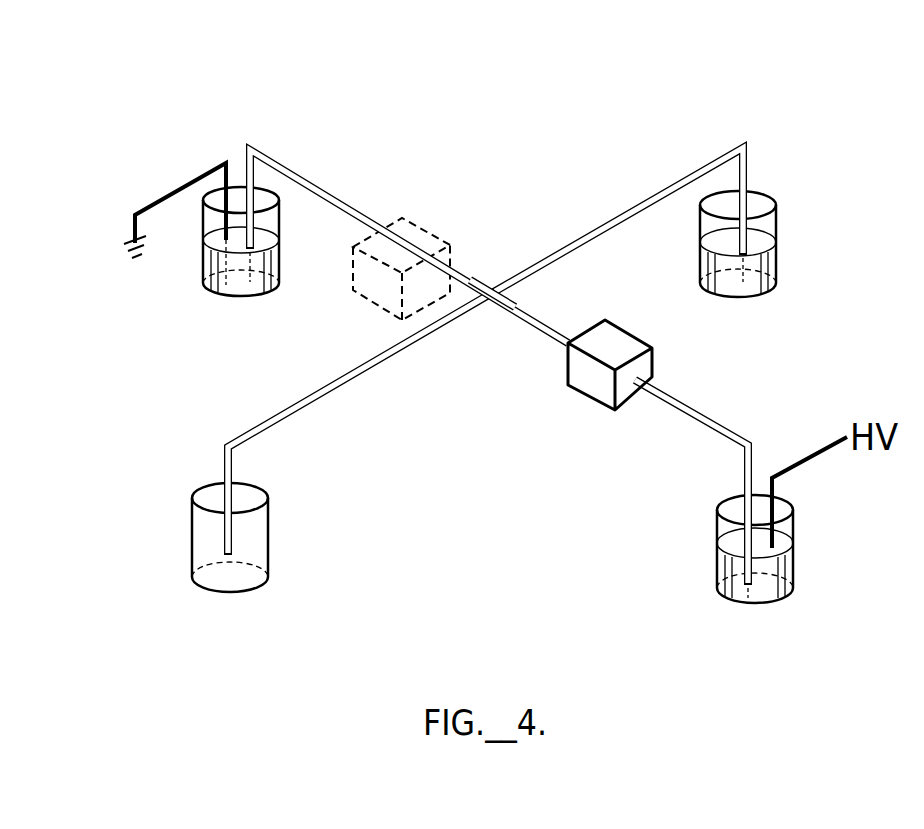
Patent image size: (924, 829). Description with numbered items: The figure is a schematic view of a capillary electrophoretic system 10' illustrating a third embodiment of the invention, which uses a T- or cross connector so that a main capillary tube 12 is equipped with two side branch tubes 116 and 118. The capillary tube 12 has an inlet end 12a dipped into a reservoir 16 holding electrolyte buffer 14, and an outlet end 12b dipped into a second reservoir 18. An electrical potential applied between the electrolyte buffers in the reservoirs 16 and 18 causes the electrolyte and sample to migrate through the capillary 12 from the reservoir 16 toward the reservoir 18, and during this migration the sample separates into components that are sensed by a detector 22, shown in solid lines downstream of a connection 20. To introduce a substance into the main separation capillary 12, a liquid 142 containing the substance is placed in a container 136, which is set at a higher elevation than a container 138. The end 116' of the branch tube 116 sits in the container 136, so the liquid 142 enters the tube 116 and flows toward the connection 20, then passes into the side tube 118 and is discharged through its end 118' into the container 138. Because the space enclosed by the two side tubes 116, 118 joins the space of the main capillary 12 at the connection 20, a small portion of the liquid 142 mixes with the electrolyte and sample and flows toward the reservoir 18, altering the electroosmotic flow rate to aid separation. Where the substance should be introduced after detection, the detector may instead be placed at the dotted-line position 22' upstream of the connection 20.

The capillary electrophoretic system 10' is at (700, 22).
The capillary tube 12 is at (303, 180).
The inlet end 12a is at (252, 280).
The outlet end 12b is at (747, 586).
The electrolyte buffer 14 is at (228, 285).
The reservoir 16 is at (203, 268).
The reservoir 18 is at (793, 535).
The connection 20 is at (490, 290).
The detector 22 is at (622, 452).
The detector position 22' is at (431, 224).
The branch tube 116 is at (617, 185).
The end of branch tube 116' is at (823, 291).
The side tube 118 is at (360, 424).
The end of side tube 118' is at (166, 581).
The container 136 is at (777, 230).
The container 138 is at (268, 552).
The liquid 142 is at (777, 283).